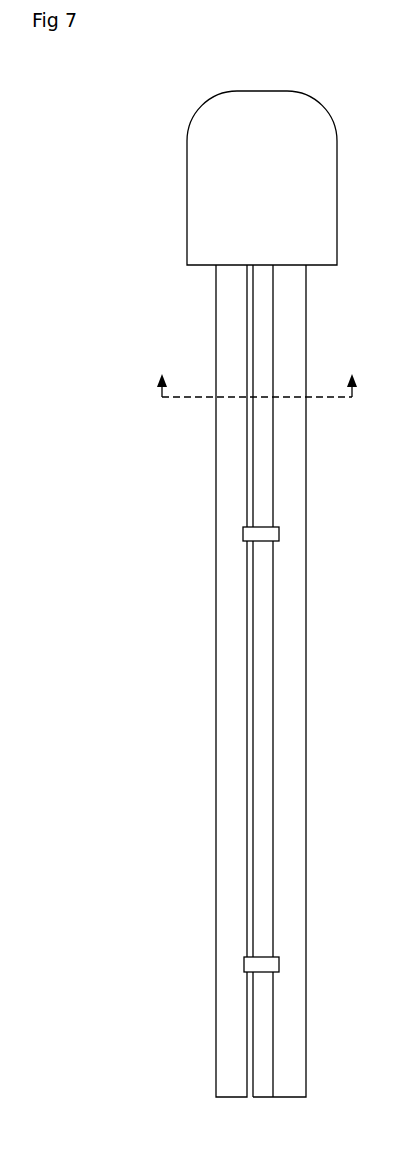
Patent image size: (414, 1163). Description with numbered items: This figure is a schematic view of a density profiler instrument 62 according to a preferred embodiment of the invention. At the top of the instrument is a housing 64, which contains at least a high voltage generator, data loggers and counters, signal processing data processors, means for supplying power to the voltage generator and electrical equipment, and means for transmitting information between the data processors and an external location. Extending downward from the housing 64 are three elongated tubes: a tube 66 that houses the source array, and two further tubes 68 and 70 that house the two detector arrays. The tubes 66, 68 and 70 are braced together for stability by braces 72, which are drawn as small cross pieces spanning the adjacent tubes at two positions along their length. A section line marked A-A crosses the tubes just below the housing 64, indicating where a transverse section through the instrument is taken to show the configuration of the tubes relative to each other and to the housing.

The density profiler instrument 62 is at (216, 594).
The housing 64 is at (208, 195).
The tube 66 is at (230, 545).
The tube 68 is at (263, 836).
The tube 70 is at (299, 737).
The braces 72 is at (265, 535).